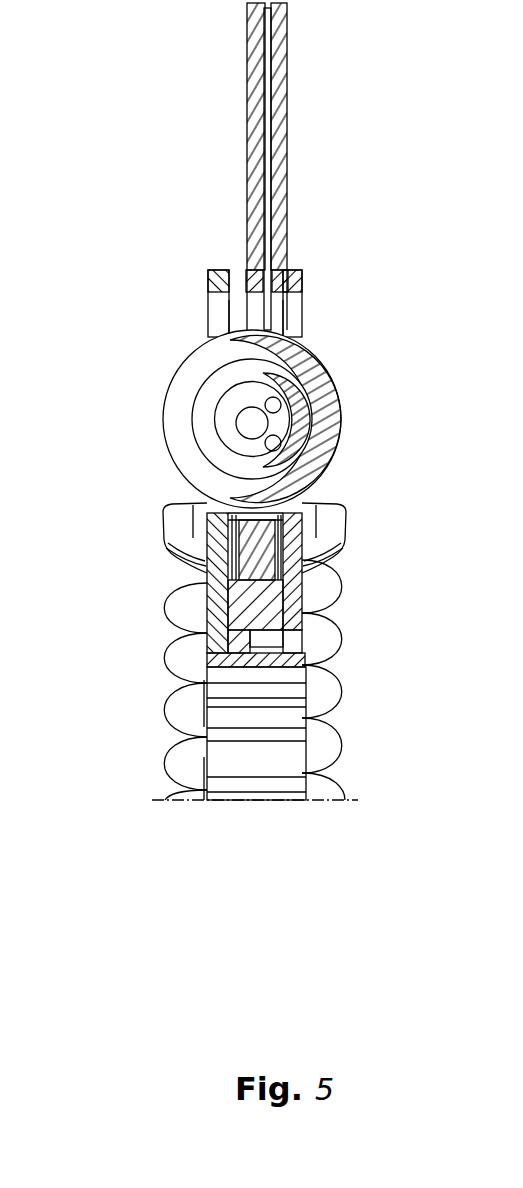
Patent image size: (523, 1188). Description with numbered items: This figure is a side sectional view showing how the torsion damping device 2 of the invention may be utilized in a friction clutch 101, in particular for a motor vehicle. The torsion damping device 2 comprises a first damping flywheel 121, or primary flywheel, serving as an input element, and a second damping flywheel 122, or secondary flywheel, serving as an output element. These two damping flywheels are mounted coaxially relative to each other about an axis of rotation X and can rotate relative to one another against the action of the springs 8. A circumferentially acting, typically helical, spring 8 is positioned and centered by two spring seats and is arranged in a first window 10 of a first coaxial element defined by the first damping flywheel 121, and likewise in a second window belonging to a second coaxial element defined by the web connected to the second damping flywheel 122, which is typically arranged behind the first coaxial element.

The friction clutch 101 is at (372, 118).
The torsion damping device 2 is at (167, 380).
The first window 10 is at (213, 318).
The first damping flywheel 121 is at (362, 272).
The second damping flywheel 122 is at (263, 543).
The spring 8 is at (341, 413).
The axis of rotation X is at (357, 800).